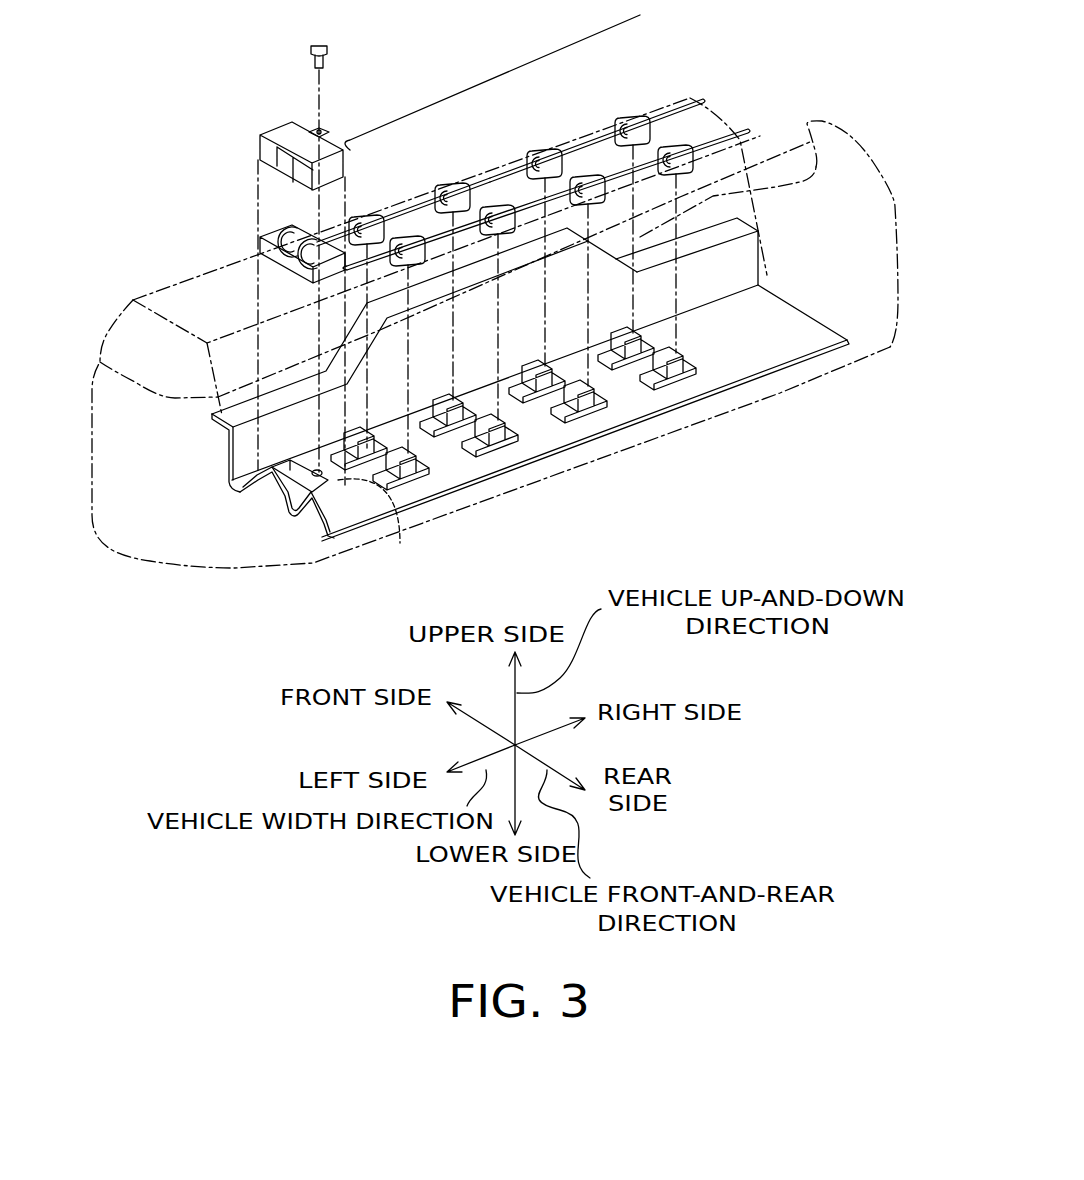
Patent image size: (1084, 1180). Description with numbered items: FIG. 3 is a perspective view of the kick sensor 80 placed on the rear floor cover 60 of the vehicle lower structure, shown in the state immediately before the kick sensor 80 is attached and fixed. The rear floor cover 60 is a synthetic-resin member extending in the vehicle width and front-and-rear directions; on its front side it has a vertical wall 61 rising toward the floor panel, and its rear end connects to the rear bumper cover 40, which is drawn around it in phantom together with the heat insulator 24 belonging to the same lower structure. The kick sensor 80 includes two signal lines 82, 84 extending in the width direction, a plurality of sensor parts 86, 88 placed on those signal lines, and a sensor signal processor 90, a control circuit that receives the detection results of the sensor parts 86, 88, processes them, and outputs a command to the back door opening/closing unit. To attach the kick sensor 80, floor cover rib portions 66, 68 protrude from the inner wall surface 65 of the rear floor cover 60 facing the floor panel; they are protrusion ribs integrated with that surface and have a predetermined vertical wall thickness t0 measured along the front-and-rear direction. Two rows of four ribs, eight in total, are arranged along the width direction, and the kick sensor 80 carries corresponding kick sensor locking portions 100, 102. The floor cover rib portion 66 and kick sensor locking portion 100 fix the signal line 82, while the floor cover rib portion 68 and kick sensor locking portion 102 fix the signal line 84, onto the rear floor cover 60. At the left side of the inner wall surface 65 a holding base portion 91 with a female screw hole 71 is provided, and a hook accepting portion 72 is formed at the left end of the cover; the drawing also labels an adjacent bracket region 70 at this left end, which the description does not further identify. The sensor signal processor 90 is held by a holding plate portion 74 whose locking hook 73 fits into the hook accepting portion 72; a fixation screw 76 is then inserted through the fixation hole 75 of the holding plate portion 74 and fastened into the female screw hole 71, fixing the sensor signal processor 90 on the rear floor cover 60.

The heat insulator 24 is at (113, 302).
The rear bumper cover 40 is at (875, 330).
The rear floor cover 60 is at (487, 480).
The vertical wall 61 is at (601, 300).
The inner wall surface 65 is at (767, 337).
The floor cover rib portion 66 is at (633, 370).
The floor cover rib portion 68 is at (688, 385).
The lower bracket 70 is at (340, 547).
The female screw hole 71 is at (356, 536).
The hook accepting portion 72 is at (303, 520).
The locking hook 73 is at (290, 160).
The holding plate portion 74 is at (286, 148).
The fixation hole 75 is at (315, 126).
The fixation screw 76 is at (308, 54).
The kick sensor 80 is at (482, 80).
The signal line 82 is at (393, 210).
The signal line 84 is at (433, 238).
The sensor part 86 is at (485, 176).
The sensor part 88 is at (535, 203).
The sensor signal processor 90 is at (297, 238).
The holding base portion 91 is at (345, 490).
The kick sensor locking portion 100 is at (633, 117).
The kick sensor locking portion 102 is at (677, 147).
The vertical wall thickness t0 is at (528, 452).